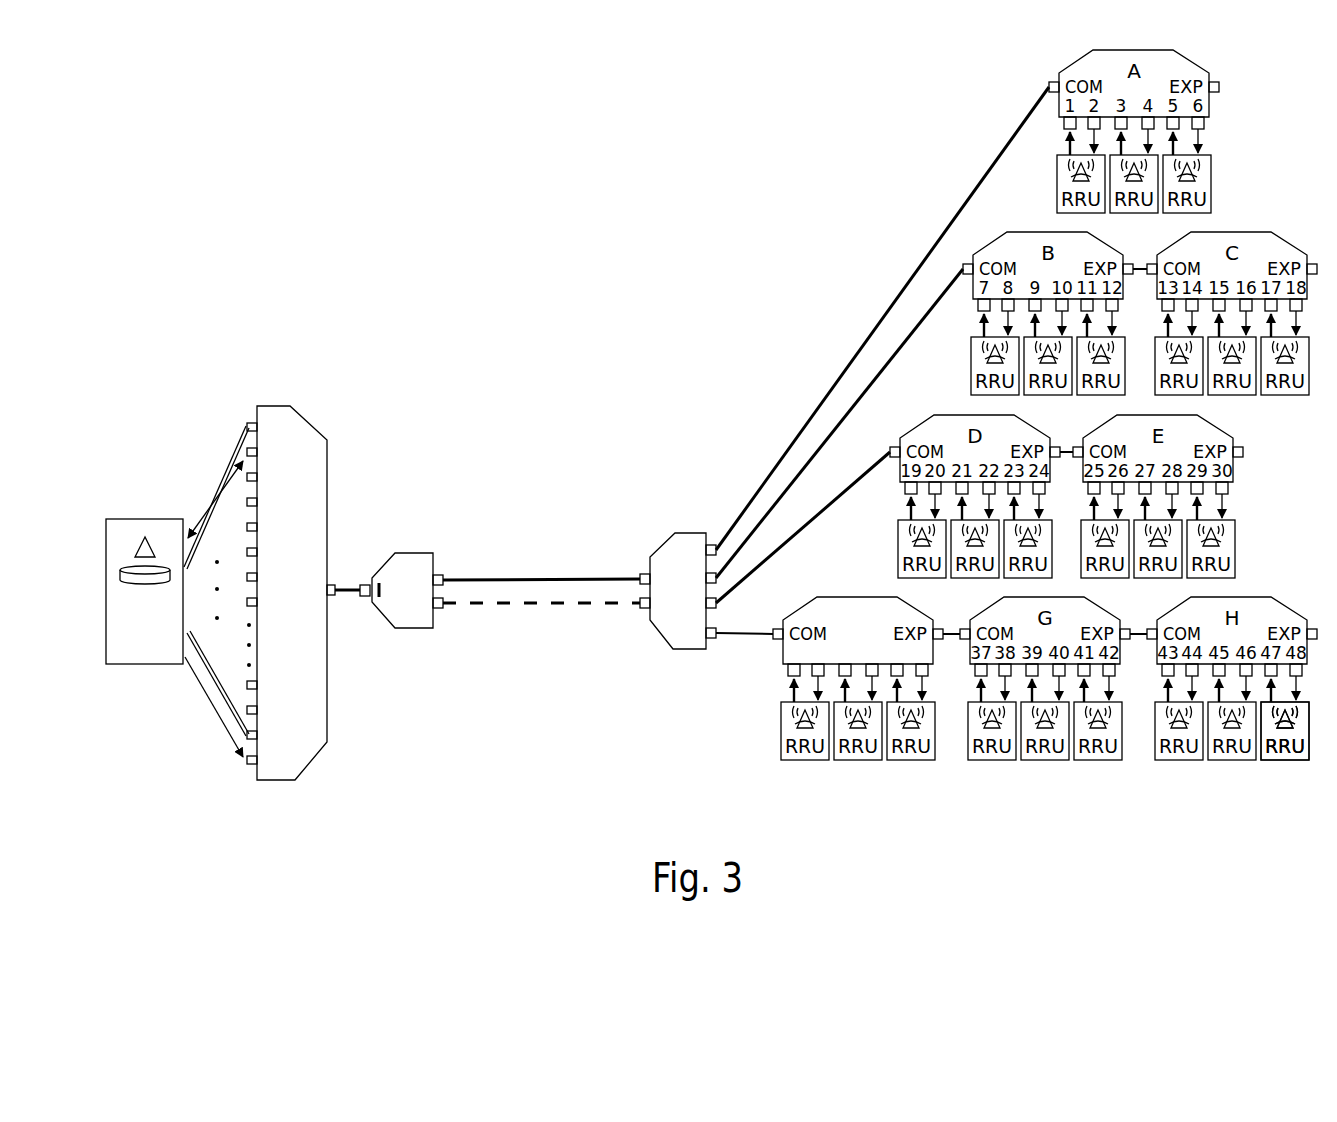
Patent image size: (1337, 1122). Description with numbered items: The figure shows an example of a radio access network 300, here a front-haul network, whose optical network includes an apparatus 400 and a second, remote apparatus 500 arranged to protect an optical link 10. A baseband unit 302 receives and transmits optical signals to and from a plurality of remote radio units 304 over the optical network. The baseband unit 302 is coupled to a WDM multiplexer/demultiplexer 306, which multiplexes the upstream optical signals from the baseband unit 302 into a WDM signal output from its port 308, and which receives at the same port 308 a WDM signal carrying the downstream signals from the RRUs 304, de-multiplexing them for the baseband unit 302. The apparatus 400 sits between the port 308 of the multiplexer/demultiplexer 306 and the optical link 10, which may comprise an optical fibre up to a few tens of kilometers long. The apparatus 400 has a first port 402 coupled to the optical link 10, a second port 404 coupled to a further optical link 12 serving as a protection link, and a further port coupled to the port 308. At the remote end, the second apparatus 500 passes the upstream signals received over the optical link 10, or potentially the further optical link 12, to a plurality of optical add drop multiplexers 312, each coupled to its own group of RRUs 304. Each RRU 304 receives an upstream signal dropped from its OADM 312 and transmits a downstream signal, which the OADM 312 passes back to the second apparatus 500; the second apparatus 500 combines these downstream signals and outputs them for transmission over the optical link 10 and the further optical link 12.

The radio access network 300 is at (650, 222).
The baseband unit 302 is at (125, 518).
The remote radio unit 304 is at (1277, 761).
The WDM multiplexer/demultiplexer 306 is at (327, 475).
The port 308 is at (331, 585).
The optical add drop multiplexer 312 is at (858, 597).
The apparatus 400 is at (468, 613).
The first port 402 is at (443, 575).
The second port 404 is at (437, 610).
The second apparatus 500 is at (682, 533).
The optical link 10 is at (635, 578).
The further optical link 12 is at (633, 605).